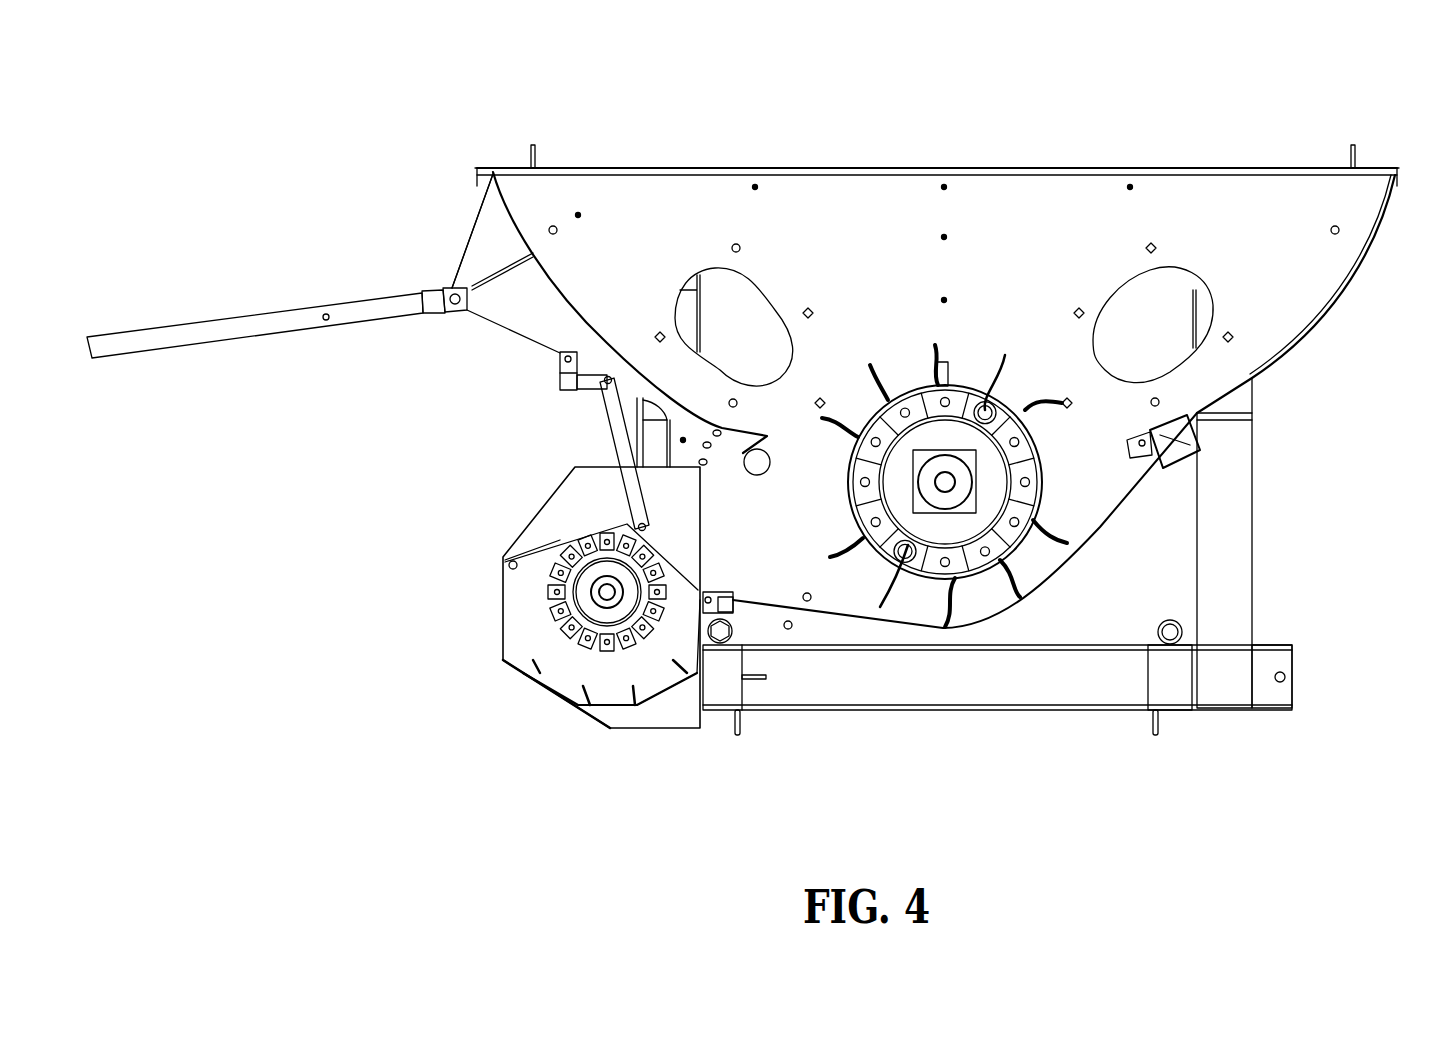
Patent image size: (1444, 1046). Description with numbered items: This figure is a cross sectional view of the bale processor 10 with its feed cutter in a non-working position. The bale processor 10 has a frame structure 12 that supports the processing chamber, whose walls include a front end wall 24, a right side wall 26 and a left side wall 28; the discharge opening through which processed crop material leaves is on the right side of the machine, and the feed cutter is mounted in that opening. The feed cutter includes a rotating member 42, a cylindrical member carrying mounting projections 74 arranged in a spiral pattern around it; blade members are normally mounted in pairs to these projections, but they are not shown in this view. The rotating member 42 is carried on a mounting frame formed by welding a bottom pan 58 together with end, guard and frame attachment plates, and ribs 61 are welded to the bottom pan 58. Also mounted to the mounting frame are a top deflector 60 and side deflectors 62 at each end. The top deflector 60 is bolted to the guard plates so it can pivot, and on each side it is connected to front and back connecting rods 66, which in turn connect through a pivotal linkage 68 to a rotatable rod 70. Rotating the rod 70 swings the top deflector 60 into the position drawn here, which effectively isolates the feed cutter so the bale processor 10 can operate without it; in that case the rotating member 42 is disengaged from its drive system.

The bale processor 10 is at (1032, 148).
The frame structure 12 is at (1010, 690).
The front end wall 24 is at (1049, 255).
The right side wall 26 is at (553, 290).
The left side wall 28 is at (1340, 295).
The rotating member 42 is at (590, 600).
The bottom pan 58 is at (660, 690).
The top deflector 60 is at (550, 540).
The ribs 61 is at (590, 697).
The side deflectors 62 is at (567, 500).
The connecting rods 66 is at (612, 433).
The pivotal linkage 68 is at (596, 374).
The rotatable rod 70 is at (560, 380).
The mounting projections 74 is at (547, 590).